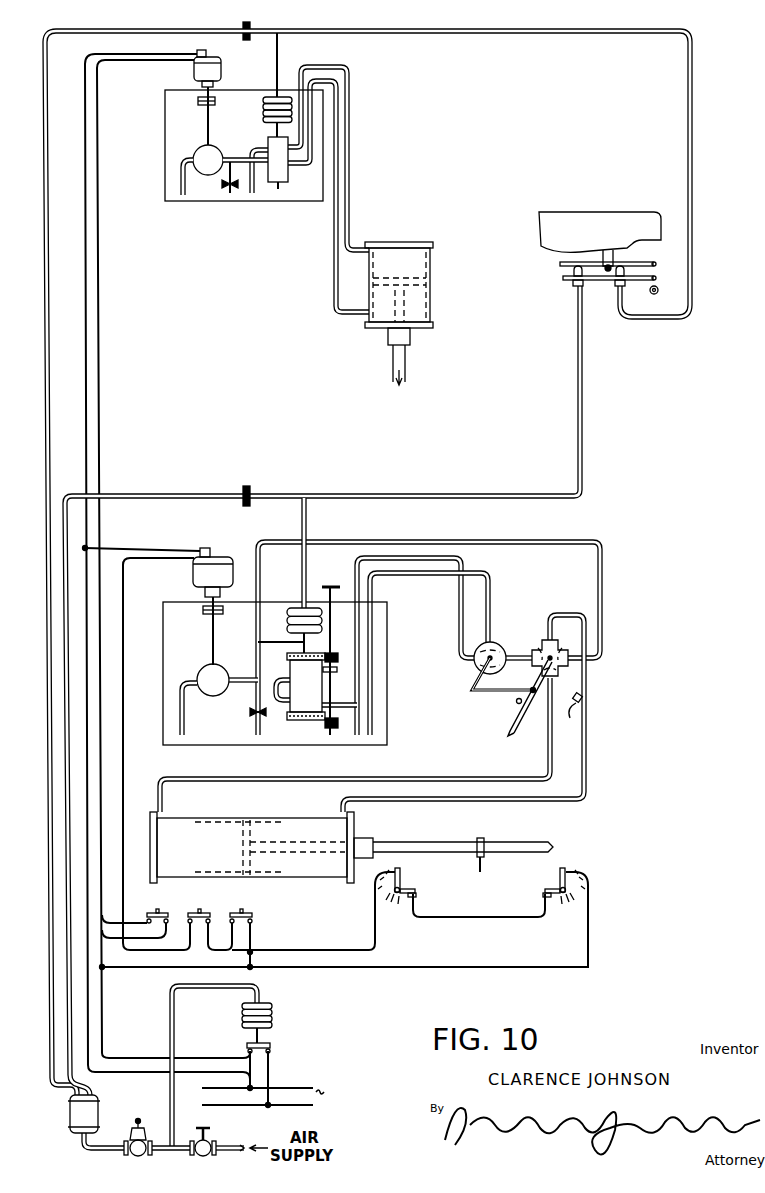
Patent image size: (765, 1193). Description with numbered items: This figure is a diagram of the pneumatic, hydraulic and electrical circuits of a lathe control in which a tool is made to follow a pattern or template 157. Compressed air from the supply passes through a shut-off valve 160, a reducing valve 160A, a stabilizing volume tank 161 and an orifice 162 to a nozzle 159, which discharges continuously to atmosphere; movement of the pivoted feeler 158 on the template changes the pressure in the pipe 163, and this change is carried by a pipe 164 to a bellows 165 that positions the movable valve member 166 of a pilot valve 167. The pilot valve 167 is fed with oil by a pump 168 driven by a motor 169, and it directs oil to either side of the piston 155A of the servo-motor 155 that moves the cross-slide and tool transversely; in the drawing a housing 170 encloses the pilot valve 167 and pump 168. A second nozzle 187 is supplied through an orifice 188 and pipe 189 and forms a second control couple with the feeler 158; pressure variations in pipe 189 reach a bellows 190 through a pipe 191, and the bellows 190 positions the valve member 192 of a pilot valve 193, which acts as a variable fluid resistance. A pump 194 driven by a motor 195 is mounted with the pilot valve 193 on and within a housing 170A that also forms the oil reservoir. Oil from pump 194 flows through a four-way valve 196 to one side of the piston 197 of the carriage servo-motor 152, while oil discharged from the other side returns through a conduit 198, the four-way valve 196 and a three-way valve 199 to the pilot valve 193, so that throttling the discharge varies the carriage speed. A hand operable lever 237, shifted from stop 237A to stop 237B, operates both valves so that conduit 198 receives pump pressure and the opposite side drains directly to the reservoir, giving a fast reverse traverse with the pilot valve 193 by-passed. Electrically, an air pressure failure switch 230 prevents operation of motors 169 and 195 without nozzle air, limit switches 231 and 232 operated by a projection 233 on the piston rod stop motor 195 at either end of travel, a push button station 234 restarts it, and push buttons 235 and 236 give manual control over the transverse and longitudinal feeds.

The servo-motor 152 is at (337, 905).
The servo-motor 155 is at (470, 290).
The piston 155A is at (408, 288).
The pattern or template 157 is at (612, 212).
The pivoted follower or feeler 158 is at (560, 263).
The nozzle 159 is at (655, 277).
The shut-off valve 160 is at (208, 1140).
The reducing valve 160A is at (160, 1103).
The stabilizing volume tank 161 is at (74, 1128).
The orifice 162 is at (243, 40).
The pipe 163 is at (655, 320).
The pipe 164 is at (280, 53).
The bellows 165 is at (263, 108).
The movable valve member 166 is at (268, 140).
The pilot valve 167 is at (283, 186).
The pump 168 is at (195, 152).
The motor 169 is at (194, 68).
The relay housing 170 is at (176, 203).
The housing 170A is at (398, 745).
The nozzle 187 is at (572, 273).
The orifice 188 is at (248, 486).
The pipe 189 is at (440, 494).
The bellows 190 is at (300, 608).
The pipe 191 is at (307, 522).
The valve member 192 is at (287, 641).
The pilot valve 193 is at (280, 712).
The pump 194 is at (197, 676).
The motor 195 is at (193, 568).
The four-way valve 196 is at (540, 640).
The piston 197 is at (243, 820).
The conduit 198 is at (568, 801).
The three-way valve 199 is at (474, 663).
The air pressure failure switch 230 is at (276, 1036).
The limit switch 231 is at (402, 876).
The limit switch 232 is at (566, 876).
The projection 233 is at (484, 862).
The push button station 234 is at (252, 914).
The push button 235 is at (165, 897).
The push button 236 is at (200, 913).
The hand operable lever 237 is at (508, 735).
The stop 237A is at (517, 702).
The stop 237B is at (579, 704).